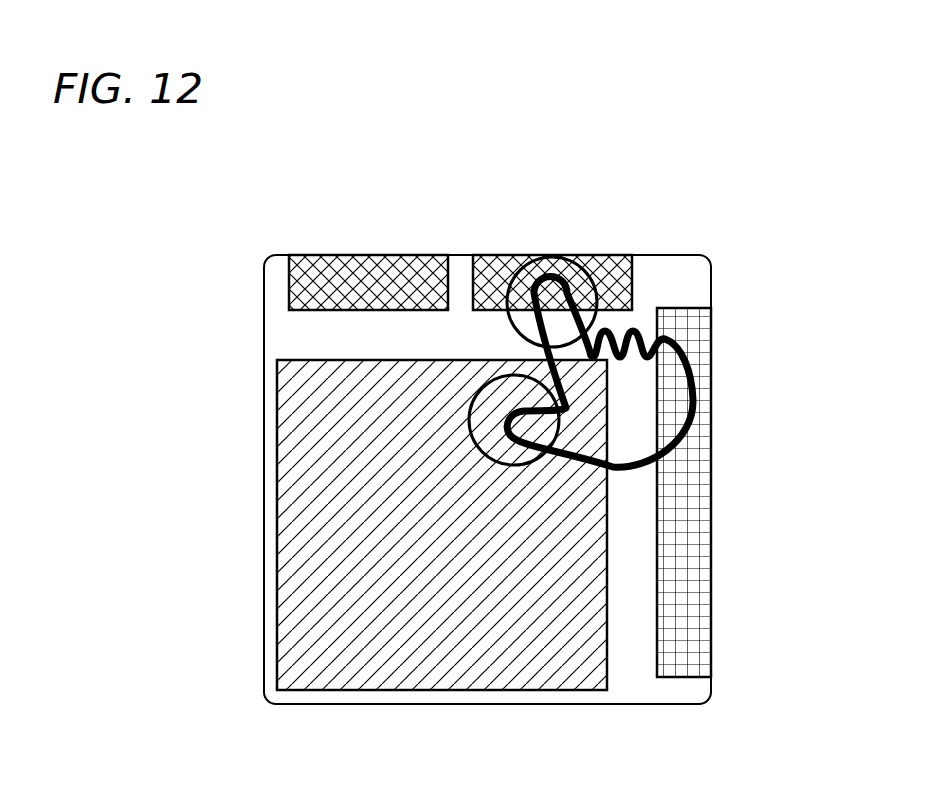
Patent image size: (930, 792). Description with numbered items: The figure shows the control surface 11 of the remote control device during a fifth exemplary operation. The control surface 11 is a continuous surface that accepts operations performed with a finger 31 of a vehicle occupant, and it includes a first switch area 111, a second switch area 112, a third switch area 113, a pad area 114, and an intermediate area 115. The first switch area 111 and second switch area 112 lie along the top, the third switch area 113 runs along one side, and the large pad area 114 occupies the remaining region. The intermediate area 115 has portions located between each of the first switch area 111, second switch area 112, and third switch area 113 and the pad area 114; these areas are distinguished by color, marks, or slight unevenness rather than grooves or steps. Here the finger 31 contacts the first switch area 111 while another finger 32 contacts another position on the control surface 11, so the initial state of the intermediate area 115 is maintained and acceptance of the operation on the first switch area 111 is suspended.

The control surface 11 is at (748, 226).
The finger 31 is at (547, 273).
The another finger 32 is at (523, 423).
The first switch area 111 is at (490, 270).
The second switch area 112 is at (350, 270).
The third switch area 113 is at (702, 513).
The pad area 114 is at (290, 628).
The intermediate area 115 is at (288, 339).